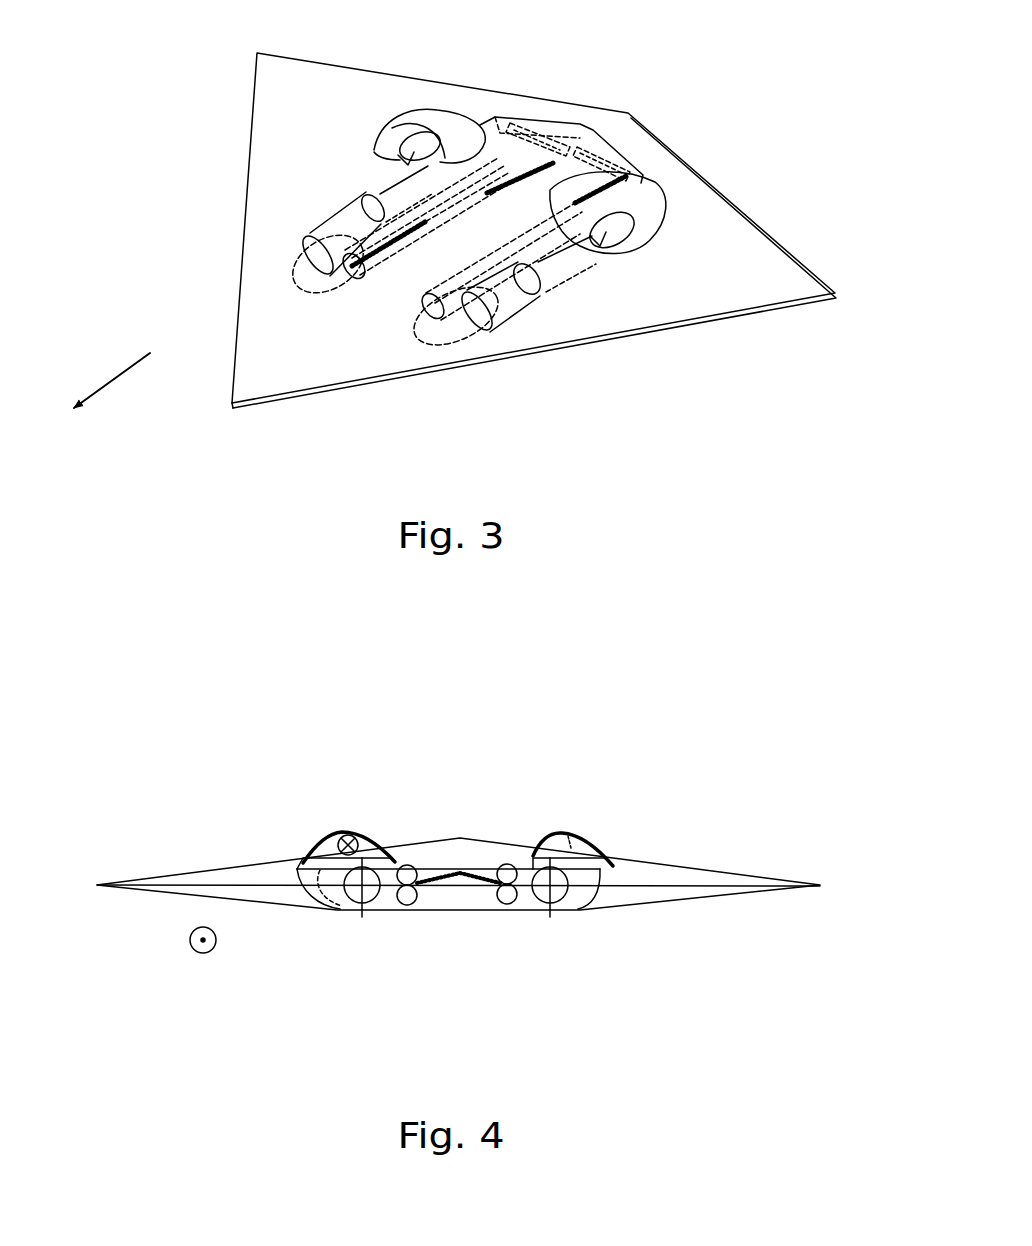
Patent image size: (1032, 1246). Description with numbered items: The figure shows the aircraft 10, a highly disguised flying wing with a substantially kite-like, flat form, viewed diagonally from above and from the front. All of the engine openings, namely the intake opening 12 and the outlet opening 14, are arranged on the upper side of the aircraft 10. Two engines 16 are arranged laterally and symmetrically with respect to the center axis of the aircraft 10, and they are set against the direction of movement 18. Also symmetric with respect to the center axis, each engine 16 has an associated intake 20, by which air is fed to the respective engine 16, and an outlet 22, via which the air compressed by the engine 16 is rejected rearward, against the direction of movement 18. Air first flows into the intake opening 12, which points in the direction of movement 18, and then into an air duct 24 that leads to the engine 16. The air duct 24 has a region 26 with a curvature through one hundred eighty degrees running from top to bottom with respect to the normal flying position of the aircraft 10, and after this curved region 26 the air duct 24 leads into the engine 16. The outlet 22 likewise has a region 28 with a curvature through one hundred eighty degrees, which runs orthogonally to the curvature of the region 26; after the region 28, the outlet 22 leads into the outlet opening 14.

In FIG. 3, the aircraft 10 is at (762, 88).
In FIG. 4, the aircraft 10 is at (740, 692).
In FIG. 3, the intake opening 12 is at (415, 110).
In FIG. 4, the intake opening 12 is at (360, 838).
In FIG. 3, the outlet opening 14 is at (523, 130).
In FIG. 4, the outlet opening 14 is at (405, 840).
In FIG. 3, the engine 16 is at (340, 223).
In FIG. 4, the engine 16 is at (350, 905).
In FIG. 3, the direction of movement 18 is at (125, 372).
In FIG. 4, the direction of movement 18 is at (192, 951).
In FIG. 3, the intake 20 is at (363, 136).
In FIG. 4, the intake 20 is at (297, 816).
In FIG. 3, the outlet 22 is at (331, 312).
In FIG. 4, the outlet 22 is at (404, 930).
In FIG. 3, the air duct 24 is at (393, 183).
In FIG. 3, the curved region of the air duct 26 is at (443, 160).
In FIG. 3, the curved region of the outlet 28 is at (338, 283).